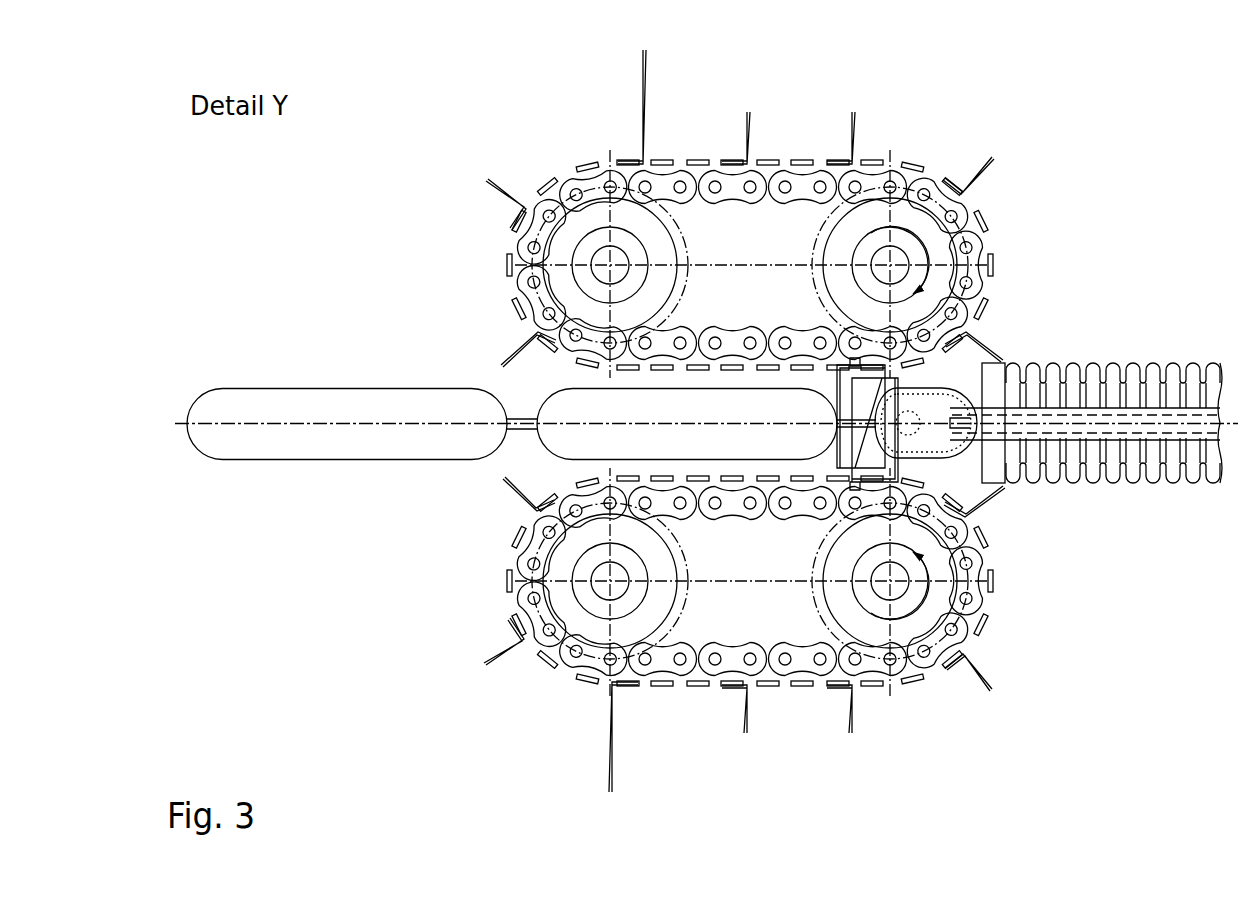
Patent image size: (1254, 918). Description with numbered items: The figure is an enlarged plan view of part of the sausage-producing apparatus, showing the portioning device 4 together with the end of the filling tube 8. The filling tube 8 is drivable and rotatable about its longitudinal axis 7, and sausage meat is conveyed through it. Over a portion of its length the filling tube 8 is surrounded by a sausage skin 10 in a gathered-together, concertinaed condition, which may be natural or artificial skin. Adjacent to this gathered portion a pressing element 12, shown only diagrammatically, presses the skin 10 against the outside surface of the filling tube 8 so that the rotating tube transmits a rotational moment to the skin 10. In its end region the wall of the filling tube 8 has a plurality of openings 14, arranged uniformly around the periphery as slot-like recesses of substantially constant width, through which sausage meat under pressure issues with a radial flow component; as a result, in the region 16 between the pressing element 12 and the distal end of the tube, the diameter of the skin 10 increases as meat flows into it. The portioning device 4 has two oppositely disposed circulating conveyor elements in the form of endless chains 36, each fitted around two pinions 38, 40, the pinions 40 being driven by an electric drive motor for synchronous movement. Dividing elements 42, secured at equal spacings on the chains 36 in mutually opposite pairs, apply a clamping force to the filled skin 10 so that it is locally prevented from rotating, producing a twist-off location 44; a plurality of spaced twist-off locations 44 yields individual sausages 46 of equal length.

The portioning device 4 is at (992, 722).
The longitudinal axis 7 is at (1171, 425).
The filling tube 8 is at (1120, 417).
The sausage skin 10 is at (951, 212).
The pressing element 12 is at (990, 480).
The openings 14 is at (963, 457).
The region 16 is at (955, 382).
The endless chains 36 is at (828, 181).
The pinions 38 is at (580, 288).
The pinions 40 is at (893, 205).
The dividing elements 42 is at (745, 134).
The twist-off location 44 is at (822, 380).
The sausages 46 is at (560, 405).